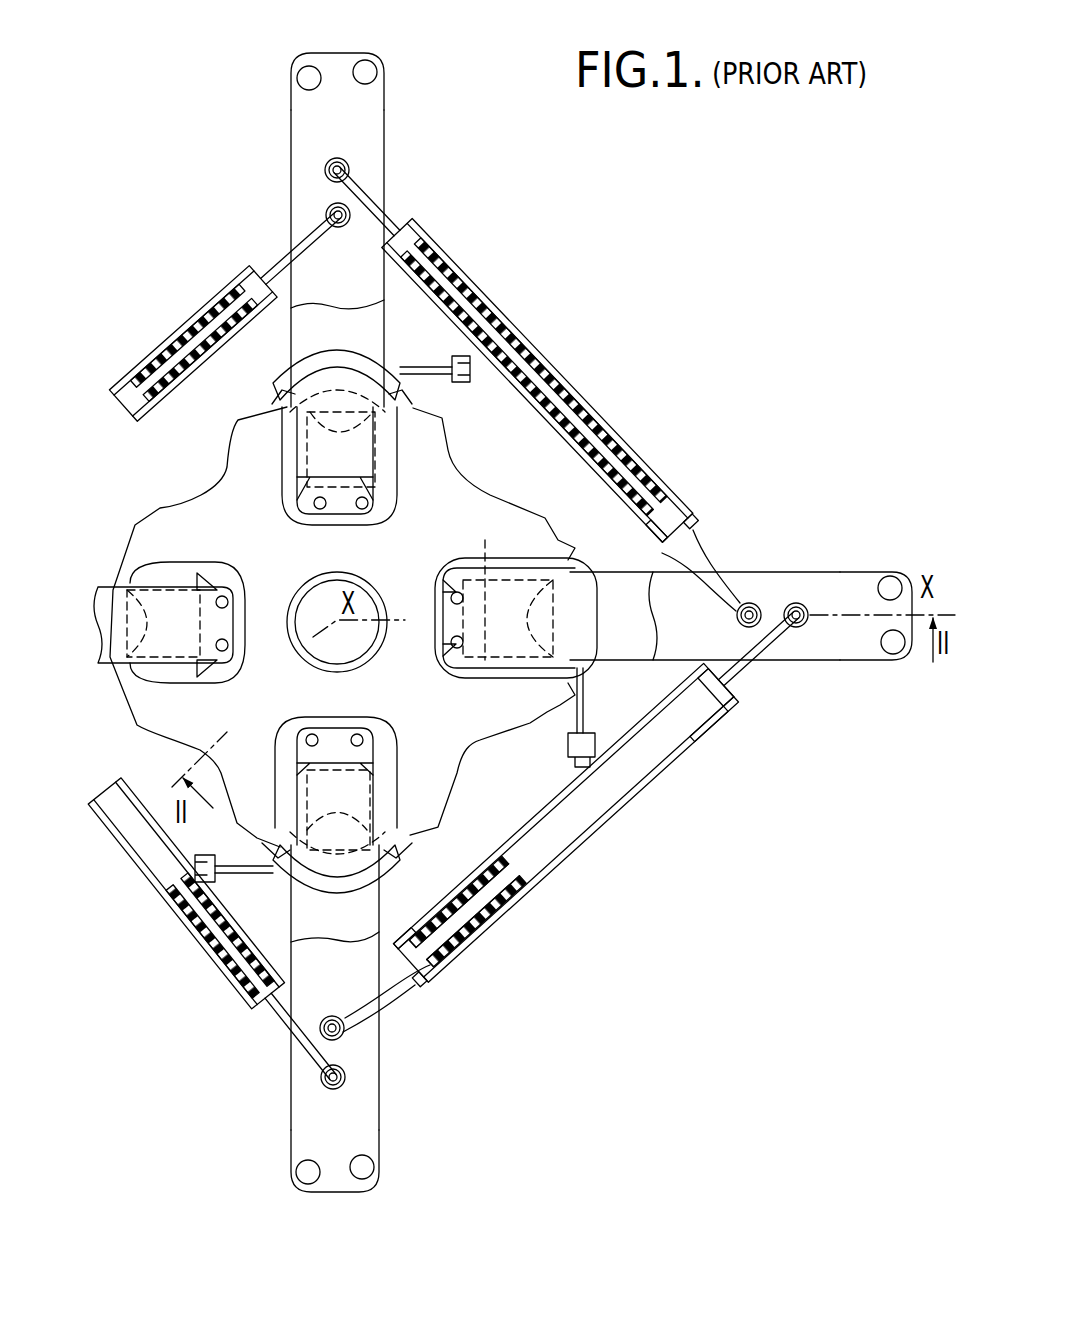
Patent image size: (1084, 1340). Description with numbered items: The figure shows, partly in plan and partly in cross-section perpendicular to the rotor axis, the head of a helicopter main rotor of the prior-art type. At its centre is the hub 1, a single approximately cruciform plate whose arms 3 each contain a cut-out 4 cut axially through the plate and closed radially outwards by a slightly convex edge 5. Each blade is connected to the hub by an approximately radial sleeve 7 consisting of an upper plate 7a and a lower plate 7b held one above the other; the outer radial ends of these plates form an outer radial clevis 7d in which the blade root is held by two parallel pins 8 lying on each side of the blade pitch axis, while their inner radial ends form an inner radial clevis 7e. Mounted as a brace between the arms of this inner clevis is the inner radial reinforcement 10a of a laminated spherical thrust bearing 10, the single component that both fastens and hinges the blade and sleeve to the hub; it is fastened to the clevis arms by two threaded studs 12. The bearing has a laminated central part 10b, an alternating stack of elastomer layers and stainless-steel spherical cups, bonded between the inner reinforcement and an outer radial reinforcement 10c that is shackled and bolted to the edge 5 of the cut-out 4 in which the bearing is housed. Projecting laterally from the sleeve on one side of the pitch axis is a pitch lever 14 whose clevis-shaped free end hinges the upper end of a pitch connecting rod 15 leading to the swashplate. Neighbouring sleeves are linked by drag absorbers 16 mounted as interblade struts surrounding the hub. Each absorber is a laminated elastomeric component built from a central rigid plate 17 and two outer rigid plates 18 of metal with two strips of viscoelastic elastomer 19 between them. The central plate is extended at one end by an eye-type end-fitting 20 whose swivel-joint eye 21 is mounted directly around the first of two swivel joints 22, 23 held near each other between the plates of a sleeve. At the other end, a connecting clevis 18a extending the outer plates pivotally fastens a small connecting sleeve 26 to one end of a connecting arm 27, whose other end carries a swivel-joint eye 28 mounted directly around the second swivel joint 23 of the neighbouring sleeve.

The hub 1 is at (158, 510).
The arm 3 is at (243, 457).
The cut-out 4 is at (290, 447).
The edge 5 is at (122, 668).
The sleeve 7 is at (386, 290).
The upper plate 7a is at (632, 637).
The lower plate 7b is at (333, 287).
The outer radial clevis 7d is at (318, 115).
The inner radial clevis 7e is at (486, 585).
The pin 8 is at (362, 60).
The laminated spherical thrust bearing 10 is at (382, 465).
The inner radial reinforcement 10a is at (380, 483).
The central part 10b is at (333, 452).
The outer radial reinforcement 10c is at (273, 402).
The threaded stud 12 is at (360, 505).
The pitch lever 14 is at (450, 360).
The pitch connecting rod 15 is at (467, 375).
The drag absorber 16 is at (190, 313).
The central rigid plate 17 is at (557, 830).
The outer rigid plate 18 is at (548, 358).
The connecting clevis 18a is at (688, 520).
The strip of viscoelastic elastomer 19 is at (688, 737).
The eye-type end-fitting 20 is at (707, 697).
The swivel-joint eye 21 is at (800, 625).
The swivel joint 22 is at (793, 627).
The swivel joint 23 is at (803, 605).
The small connecting sleeve 26 is at (687, 517).
The connecting arm 27 is at (703, 557).
The swivel-joint eye 28 is at (752, 606).